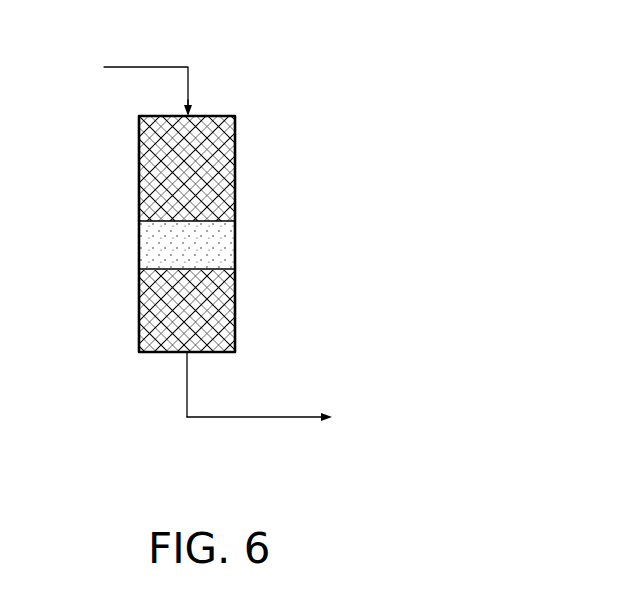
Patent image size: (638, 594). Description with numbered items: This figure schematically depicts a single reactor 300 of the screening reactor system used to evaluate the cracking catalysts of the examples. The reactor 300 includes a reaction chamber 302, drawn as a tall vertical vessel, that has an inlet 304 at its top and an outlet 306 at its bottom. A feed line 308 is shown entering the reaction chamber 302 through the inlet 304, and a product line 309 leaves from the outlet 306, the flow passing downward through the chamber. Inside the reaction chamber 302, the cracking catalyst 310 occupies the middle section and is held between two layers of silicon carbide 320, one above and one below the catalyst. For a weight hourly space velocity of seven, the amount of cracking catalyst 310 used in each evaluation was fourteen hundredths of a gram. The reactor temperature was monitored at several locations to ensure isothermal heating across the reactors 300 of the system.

The reactor 300 is at (235, 167).
The reaction chamber 302 is at (144, 174).
The inlet 304 is at (191, 108).
The outlet 306 is at (183, 354).
The feed stream 308 is at (145, 66).
The product stream 309 is at (260, 418).
The cracking catalyst 310 is at (229, 245).
The layers of silicon carbide 320 is at (230, 192).